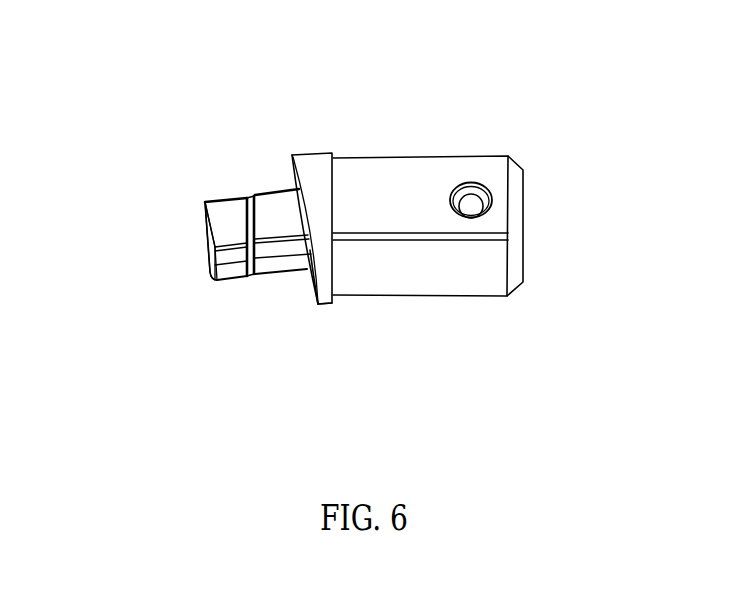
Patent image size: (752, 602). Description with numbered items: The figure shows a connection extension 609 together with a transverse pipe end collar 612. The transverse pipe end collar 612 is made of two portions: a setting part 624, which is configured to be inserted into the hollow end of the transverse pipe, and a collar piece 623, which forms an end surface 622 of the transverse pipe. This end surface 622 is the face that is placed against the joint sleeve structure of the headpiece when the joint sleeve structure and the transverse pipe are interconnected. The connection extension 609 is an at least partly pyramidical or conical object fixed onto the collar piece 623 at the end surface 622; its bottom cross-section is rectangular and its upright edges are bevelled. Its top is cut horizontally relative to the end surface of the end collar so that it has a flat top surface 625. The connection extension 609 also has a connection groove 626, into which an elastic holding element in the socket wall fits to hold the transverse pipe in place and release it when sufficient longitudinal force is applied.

The connection extension 609 is at (224, 198).
The transverse pipe end collar 612 is at (414, 146).
The end surface 622 is at (292, 163).
The collar piece 623 is at (325, 305).
The setting part 624 is at (420, 295).
The flat top surface 625 is at (207, 240).
The connection groove 626 is at (253, 274).